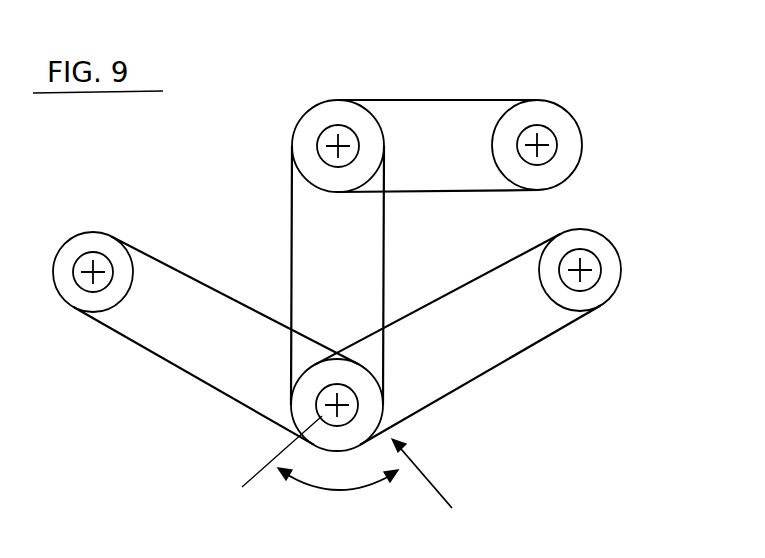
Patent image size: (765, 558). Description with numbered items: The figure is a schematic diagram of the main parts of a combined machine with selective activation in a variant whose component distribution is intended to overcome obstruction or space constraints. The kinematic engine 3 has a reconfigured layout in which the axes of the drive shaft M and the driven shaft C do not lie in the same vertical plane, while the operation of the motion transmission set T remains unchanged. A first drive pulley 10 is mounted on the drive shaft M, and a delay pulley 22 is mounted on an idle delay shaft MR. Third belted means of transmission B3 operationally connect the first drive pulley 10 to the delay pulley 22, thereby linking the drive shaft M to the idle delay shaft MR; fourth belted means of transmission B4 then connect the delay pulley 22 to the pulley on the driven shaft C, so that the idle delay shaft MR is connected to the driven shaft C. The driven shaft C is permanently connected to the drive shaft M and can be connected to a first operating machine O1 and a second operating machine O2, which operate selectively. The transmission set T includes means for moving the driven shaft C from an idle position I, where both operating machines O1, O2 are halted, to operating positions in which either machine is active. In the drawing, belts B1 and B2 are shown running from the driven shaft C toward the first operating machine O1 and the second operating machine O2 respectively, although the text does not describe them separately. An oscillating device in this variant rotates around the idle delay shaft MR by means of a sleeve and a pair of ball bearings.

The kinematic engine 3 is at (447, 101).
The third belted means of transmission B3 is at (484, 100).
The drive shaft M is at (545, 140).
The first drive pulley 10 is at (566, 149).
The idle delay shaft MR is at (336, 143).
The delay pulley 22 is at (300, 142).
The fourth belted means of transmission B4 is at (291, 250).
The first operating machine O1 is at (79, 258).
The second operating machine O2 is at (598, 257).
The first belt B1 is at (150, 349).
The second belt B2 is at (505, 366).
The driven shaft C is at (309, 474).
The idle position I is at (331, 530).
The selective motion transmission set T is at (429, 489).